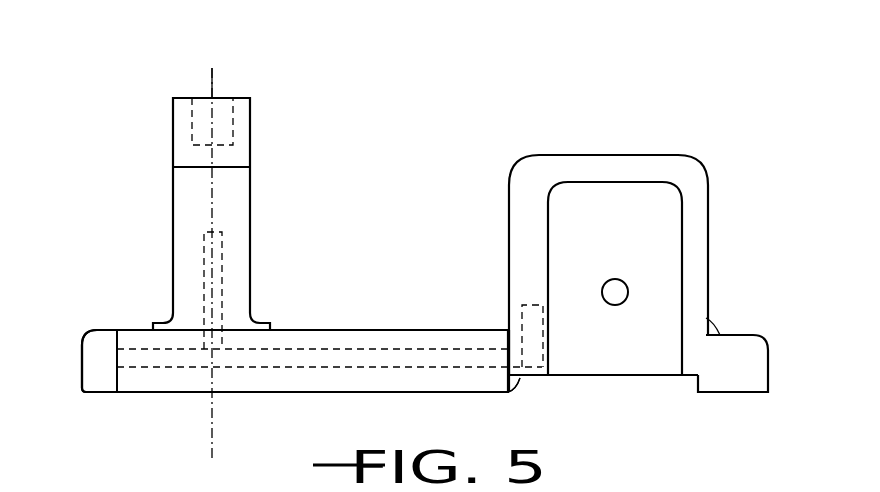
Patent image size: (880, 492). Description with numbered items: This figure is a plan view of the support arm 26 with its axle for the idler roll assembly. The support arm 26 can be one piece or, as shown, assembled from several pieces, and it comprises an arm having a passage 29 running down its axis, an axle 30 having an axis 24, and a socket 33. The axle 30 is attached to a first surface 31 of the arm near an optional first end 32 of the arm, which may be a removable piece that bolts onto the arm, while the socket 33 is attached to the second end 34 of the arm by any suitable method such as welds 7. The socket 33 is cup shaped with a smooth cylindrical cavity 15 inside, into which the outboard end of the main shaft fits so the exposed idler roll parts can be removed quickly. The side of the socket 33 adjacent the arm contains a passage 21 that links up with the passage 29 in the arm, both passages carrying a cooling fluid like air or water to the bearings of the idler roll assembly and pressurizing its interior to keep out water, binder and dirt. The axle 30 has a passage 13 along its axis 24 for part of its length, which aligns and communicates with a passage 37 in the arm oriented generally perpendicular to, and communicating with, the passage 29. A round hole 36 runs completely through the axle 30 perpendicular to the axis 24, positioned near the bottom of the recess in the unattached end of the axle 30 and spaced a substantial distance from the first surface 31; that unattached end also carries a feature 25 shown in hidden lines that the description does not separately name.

The welds 7 is at (495, 328).
The passage 13 is at (208, 283).
The cylindrical cavity 15 is at (630, 245).
The passage 21 is at (535, 313).
The axis 24 is at (212, 83).
The cap bore 25 is at (213, 123).
The support arm 26 is at (299, 397).
The passage 29 is at (407, 357).
The axle 30 is at (250, 247).
The first surface 31 is at (135, 328).
The first end 32 is at (80, 373).
The socket 33 is at (703, 232).
The second end 34 is at (512, 338).
The round hole 36 is at (227, 183).
The passage 37 is at (217, 345).